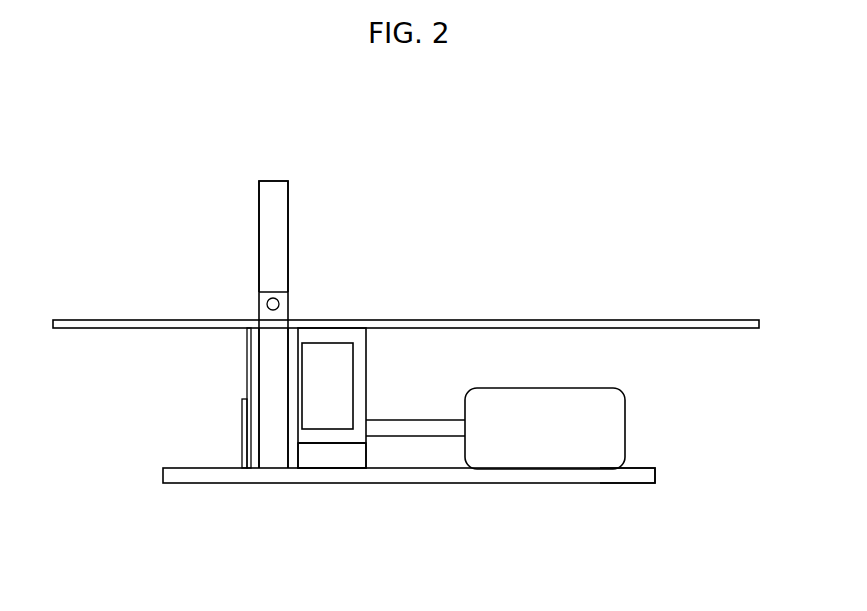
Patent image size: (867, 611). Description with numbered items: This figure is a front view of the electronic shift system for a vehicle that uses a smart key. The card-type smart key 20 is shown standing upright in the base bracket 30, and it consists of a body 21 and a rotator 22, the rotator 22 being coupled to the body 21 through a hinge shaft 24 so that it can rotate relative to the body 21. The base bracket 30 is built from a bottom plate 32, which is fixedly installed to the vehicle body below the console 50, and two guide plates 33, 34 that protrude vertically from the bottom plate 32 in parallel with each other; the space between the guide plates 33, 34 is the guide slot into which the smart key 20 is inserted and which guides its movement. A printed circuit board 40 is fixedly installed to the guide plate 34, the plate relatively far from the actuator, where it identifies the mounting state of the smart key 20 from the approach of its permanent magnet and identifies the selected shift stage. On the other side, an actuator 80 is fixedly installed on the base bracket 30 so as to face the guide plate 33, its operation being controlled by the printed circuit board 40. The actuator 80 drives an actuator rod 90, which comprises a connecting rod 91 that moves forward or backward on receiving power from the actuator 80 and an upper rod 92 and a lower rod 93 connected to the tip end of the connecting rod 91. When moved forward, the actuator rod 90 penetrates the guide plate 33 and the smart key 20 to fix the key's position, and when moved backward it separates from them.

The smart key 20 is at (296, 180).
The body 21 is at (273, 452).
The rotator 22 is at (263, 199).
The hinge shaft 24 is at (258, 303).
The base bracket 30 is at (516, 484).
The bottom plate 32 is at (623, 477).
The guide plate 33 is at (295, 372).
The guide plate 34 is at (249, 365).
The printed circuit board 40 is at (243, 436).
The console 50 is at (603, 320).
The actuator 80 is at (607, 425).
The actuator rod 90 is at (367, 453).
The connecting rod 91 is at (420, 428).
The upper rod 92 is at (335, 332).
The lower rod 93 is at (330, 437).